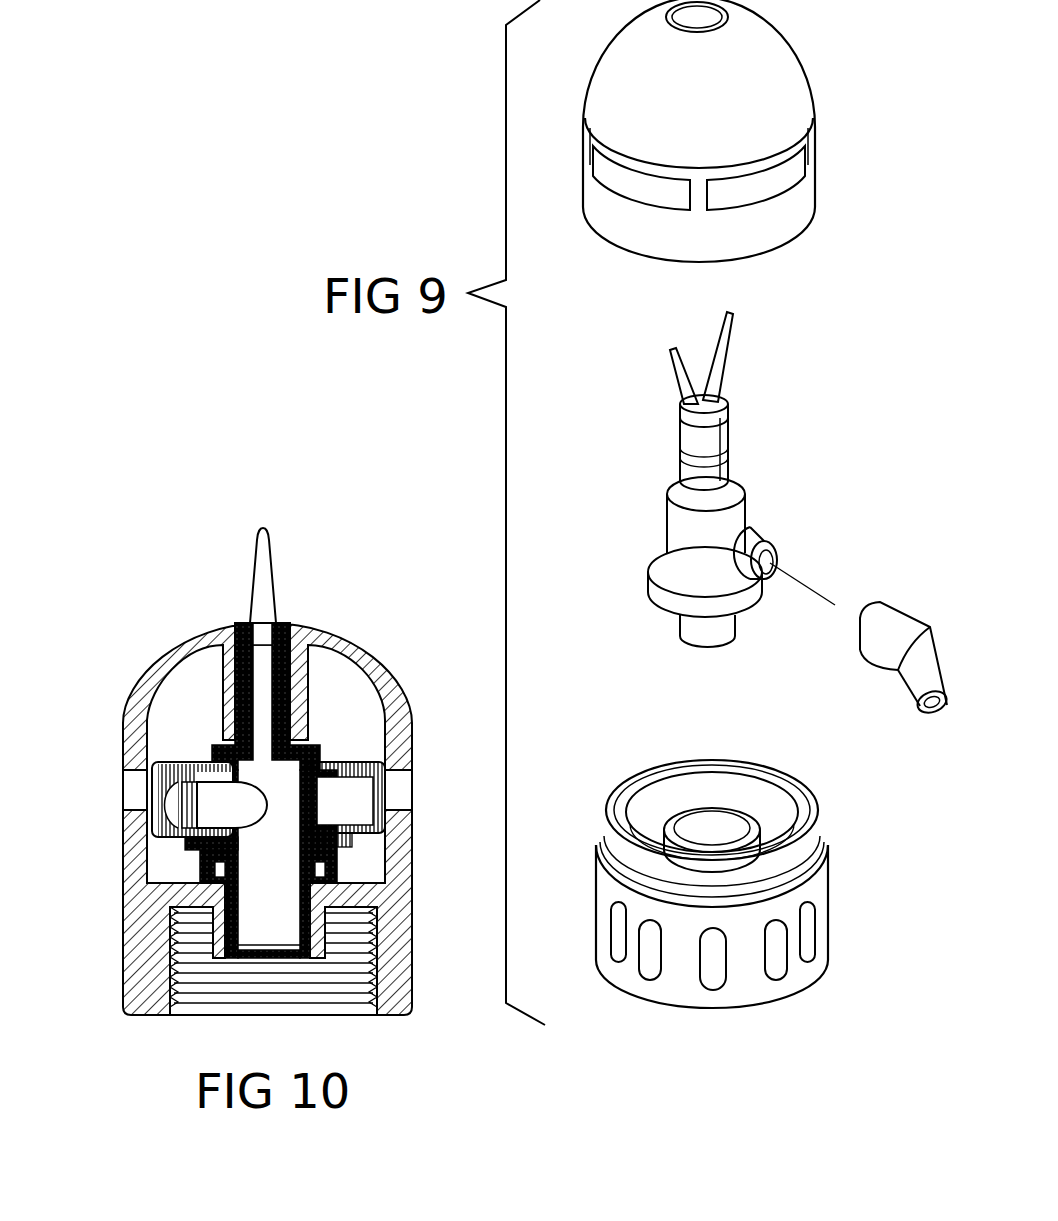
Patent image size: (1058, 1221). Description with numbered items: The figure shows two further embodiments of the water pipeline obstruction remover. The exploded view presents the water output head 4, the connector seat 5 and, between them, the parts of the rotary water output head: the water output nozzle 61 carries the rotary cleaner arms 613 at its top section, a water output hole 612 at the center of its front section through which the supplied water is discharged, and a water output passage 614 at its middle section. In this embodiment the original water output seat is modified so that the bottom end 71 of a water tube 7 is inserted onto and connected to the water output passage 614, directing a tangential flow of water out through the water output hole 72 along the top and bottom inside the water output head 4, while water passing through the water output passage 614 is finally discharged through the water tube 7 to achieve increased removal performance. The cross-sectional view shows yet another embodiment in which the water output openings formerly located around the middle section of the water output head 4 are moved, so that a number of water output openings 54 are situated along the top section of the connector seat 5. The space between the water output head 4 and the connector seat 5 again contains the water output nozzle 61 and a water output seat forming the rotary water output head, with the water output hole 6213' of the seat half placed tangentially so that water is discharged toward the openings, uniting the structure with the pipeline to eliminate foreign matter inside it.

In FIG. 9, the water output head 4 is at (755, 76).
In FIG. 10, the water output head 4 is at (375, 658).
In FIG. 9, the connector seat 5 is at (820, 893).
In FIG. 10, the connector seat 5 is at (415, 920).
In FIG. 9, the water tube 7 is at (866, 636).
In FIG. 9, the bottom end 71 is at (858, 625).
In FIG. 9, the water output hole 72 is at (920, 710).
In FIG. 10, the water output openings 54 is at (132, 793).
In FIG. 9, the water output nozzle 61 is at (705, 475).
In FIG. 10, the water output nozzle 61 is at (297, 623).
In FIG. 9, the water output hole 612 is at (727, 405).
In FIG. 9, the rotary cleaner arms 613 is at (733, 337).
In FIG. 9, the water output passage 614 is at (772, 557).
In FIG. 10, the water output hole 6213' is at (162, 713).